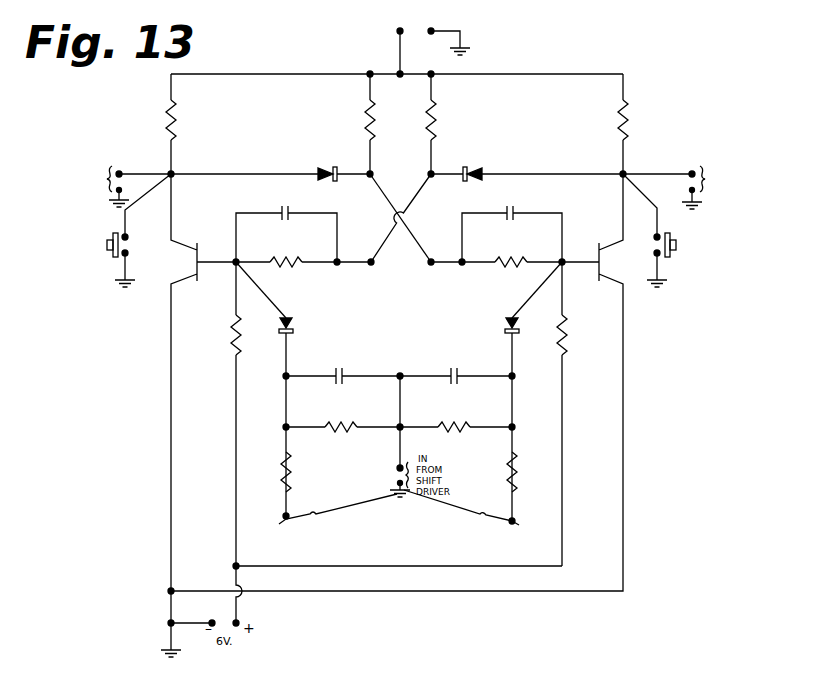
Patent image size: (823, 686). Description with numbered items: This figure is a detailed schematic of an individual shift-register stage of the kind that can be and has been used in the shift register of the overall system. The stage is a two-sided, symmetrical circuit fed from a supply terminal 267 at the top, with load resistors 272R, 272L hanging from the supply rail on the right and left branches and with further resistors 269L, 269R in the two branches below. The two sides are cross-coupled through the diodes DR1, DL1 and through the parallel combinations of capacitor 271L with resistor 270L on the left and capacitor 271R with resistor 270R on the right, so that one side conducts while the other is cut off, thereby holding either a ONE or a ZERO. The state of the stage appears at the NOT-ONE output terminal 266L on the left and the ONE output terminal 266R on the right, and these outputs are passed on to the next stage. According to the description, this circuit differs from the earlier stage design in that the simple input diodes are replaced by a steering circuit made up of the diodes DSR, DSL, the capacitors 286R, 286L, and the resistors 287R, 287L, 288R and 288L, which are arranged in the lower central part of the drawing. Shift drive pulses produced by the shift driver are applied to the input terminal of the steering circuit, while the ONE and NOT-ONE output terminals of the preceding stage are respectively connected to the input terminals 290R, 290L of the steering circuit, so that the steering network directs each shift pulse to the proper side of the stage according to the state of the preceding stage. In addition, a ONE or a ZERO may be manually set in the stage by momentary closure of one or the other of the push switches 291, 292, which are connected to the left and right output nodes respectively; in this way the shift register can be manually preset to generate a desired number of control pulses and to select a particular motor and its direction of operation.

The 20 volt supply terminal 267 is at (400, 72).
The 12K resistor (right) 272R is at (366, 120).
The 12K resistor (left) 272L is at (435, 120).
The output terminal (L) NOT-ONE 266L is at (118, 172).
The output terminal (R) ONE 266R is at (690, 172).
The 56 micro-microfarad capacitor (left) 271L is at (273, 218).
The 56 micro-microfarad capacitor (right) 271R is at (498, 218).
The 3300 ohm resistor (left) 270L is at (303, 278).
The 3300 ohm resistor (right) 270R is at (496, 278).
The 18K resistor (left) 269L is at (231, 332).
The 18K resistor (right) 269R is at (578, 330).
The capacitor 286R is at (330, 370).
The capacitor 286L is at (462, 358).
The resistor 287R is at (334, 424).
The resistor 287L is at (454, 423).
The resistor 288R is at (289, 468).
The resistor 288L is at (508, 468).
The input terminal 290R is at (281, 519).
The input terminal 290L is at (511, 523).
The switch 291 is at (107, 247).
The switch 292 is at (673, 249).
The diode DR1 is at (320, 165).
The diode DL1 is at (487, 155).
The steering diode DSR is at (292, 320).
The steering diode DSL is at (518, 320).